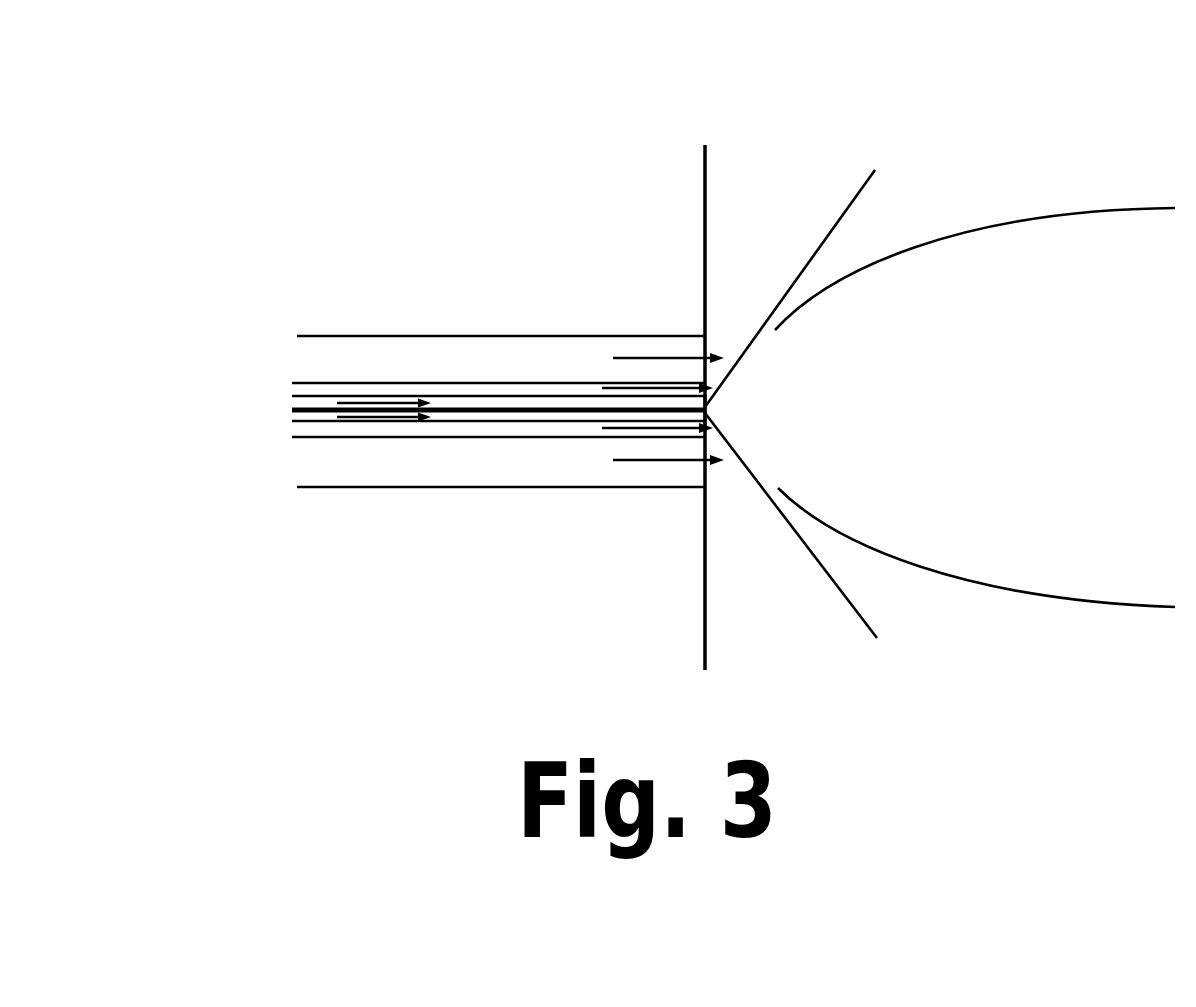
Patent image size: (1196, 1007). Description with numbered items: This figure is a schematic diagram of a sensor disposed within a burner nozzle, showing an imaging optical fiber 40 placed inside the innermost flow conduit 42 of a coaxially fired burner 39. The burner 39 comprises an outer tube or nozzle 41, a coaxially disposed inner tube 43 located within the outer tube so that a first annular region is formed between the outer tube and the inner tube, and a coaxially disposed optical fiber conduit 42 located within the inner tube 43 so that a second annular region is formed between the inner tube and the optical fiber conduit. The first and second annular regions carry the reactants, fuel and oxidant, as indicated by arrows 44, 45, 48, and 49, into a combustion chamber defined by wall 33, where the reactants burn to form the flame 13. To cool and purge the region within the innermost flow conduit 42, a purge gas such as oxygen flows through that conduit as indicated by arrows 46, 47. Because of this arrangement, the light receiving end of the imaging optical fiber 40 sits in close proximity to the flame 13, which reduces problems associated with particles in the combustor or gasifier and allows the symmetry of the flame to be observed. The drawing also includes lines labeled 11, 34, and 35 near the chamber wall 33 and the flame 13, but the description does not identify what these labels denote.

The nozzle outlet 11 is at (713, 405).
The flame 13 is at (985, 227).
The wall 33 is at (703, 243).
The lower jet boundary line 34 is at (798, 535).
The upper jet boundary line 35 is at (818, 248).
The coaxially fired burner 39 is at (422, 158).
The imaging optical fiber 40 is at (538, 408).
The outer tube 41 is at (493, 336).
The optical fiber conduit 42 is at (428, 421).
The inner tube 43 is at (513, 437).
The arrow 44 is at (612, 387).
The arrow 45 is at (622, 430).
The arrow 46 is at (368, 403).
The arrow 47 is at (369, 418).
The arrow 48 is at (675, 358).
The arrow 49 is at (675, 462).